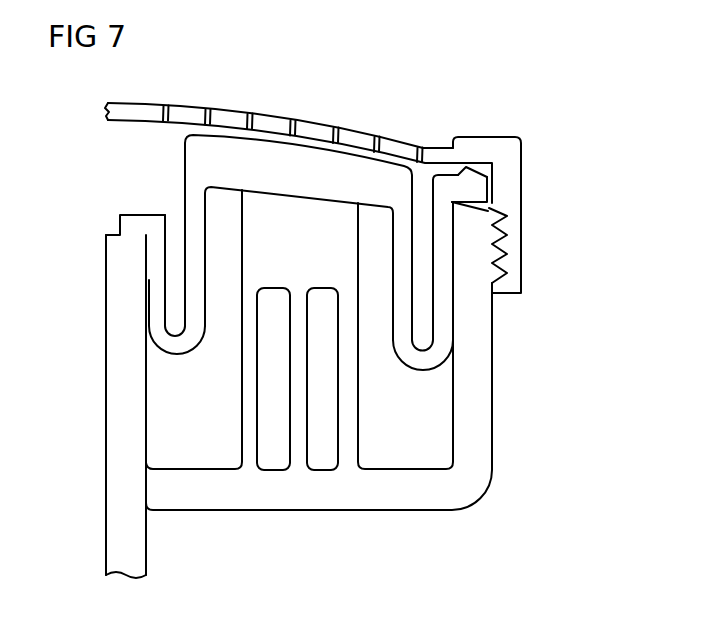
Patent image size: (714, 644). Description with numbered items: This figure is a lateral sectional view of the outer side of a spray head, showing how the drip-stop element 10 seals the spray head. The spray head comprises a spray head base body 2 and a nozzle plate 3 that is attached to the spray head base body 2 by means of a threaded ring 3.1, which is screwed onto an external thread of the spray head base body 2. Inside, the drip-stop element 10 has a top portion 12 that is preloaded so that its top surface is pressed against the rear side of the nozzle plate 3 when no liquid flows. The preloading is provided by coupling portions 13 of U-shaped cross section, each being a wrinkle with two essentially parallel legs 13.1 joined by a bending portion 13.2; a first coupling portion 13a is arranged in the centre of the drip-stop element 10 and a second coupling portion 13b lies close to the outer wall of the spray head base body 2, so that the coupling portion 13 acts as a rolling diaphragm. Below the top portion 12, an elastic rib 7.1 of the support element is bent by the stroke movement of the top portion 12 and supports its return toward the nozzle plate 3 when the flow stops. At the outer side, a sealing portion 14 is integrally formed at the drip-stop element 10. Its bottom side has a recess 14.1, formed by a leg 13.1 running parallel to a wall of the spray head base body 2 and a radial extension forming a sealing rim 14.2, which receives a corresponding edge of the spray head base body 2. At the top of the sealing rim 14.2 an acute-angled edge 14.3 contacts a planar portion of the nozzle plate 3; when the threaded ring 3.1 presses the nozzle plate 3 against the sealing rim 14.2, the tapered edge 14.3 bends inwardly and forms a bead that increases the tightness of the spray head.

The spray head base body 2 is at (478, 470).
The nozzle plate 3 is at (363, 138).
The threaded ring 3.1 is at (508, 158).
The elastic rib 7.1 is at (313, 433).
The drip-stop element 10 is at (158, 181).
The top portion 12 is at (301, 150).
The coupling portion 13 is at (301, 312).
The first coupling portion 13a is at (179, 357).
The second coupling portion 13b is at (416, 372).
The leg 13.1 is at (153, 284).
The bending portion 13.2 is at (428, 358).
The sealing portion 14 is at (511, 188).
The recess 14.1 is at (467, 211).
The sealing rim 14.2 is at (493, 192).
The edge 14.3 is at (461, 174).